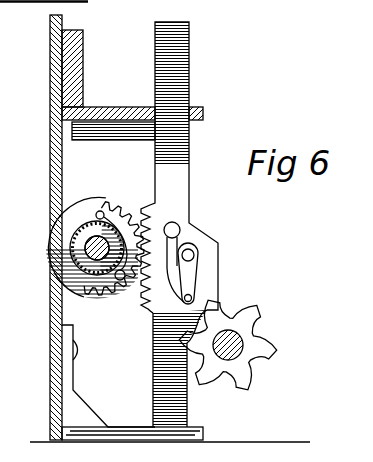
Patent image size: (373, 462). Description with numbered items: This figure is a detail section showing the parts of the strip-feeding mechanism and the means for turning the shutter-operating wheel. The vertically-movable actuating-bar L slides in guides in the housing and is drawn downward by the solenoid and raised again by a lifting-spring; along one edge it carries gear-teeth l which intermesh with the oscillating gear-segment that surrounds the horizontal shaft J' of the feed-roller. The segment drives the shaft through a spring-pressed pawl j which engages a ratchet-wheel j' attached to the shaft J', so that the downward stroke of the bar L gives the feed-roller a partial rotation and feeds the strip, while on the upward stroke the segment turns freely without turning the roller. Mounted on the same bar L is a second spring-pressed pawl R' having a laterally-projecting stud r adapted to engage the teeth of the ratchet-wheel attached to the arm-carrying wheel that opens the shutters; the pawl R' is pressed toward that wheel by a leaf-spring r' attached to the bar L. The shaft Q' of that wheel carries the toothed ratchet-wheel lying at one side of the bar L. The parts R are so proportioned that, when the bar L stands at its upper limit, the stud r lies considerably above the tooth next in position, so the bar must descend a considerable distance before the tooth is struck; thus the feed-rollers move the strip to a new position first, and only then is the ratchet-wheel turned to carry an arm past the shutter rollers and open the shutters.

The actuating-bar L is at (185, 224).
The gear-teeth l is at (143, 293).
The horizontal shaft J' is at (92, 230).
The spring-pressed pawl j is at (107, 273).
The ratchet-wheel j' is at (65, 254).
The spring-pressed pawl R' is at (216, 273).
The laterally-projecting stud r is at (214, 287).
The leaf-spring r' is at (168, 271).
The shutter-actuating parts R is at (227, 356).
The ratchet wheel shaft Q' is at (252, 362).